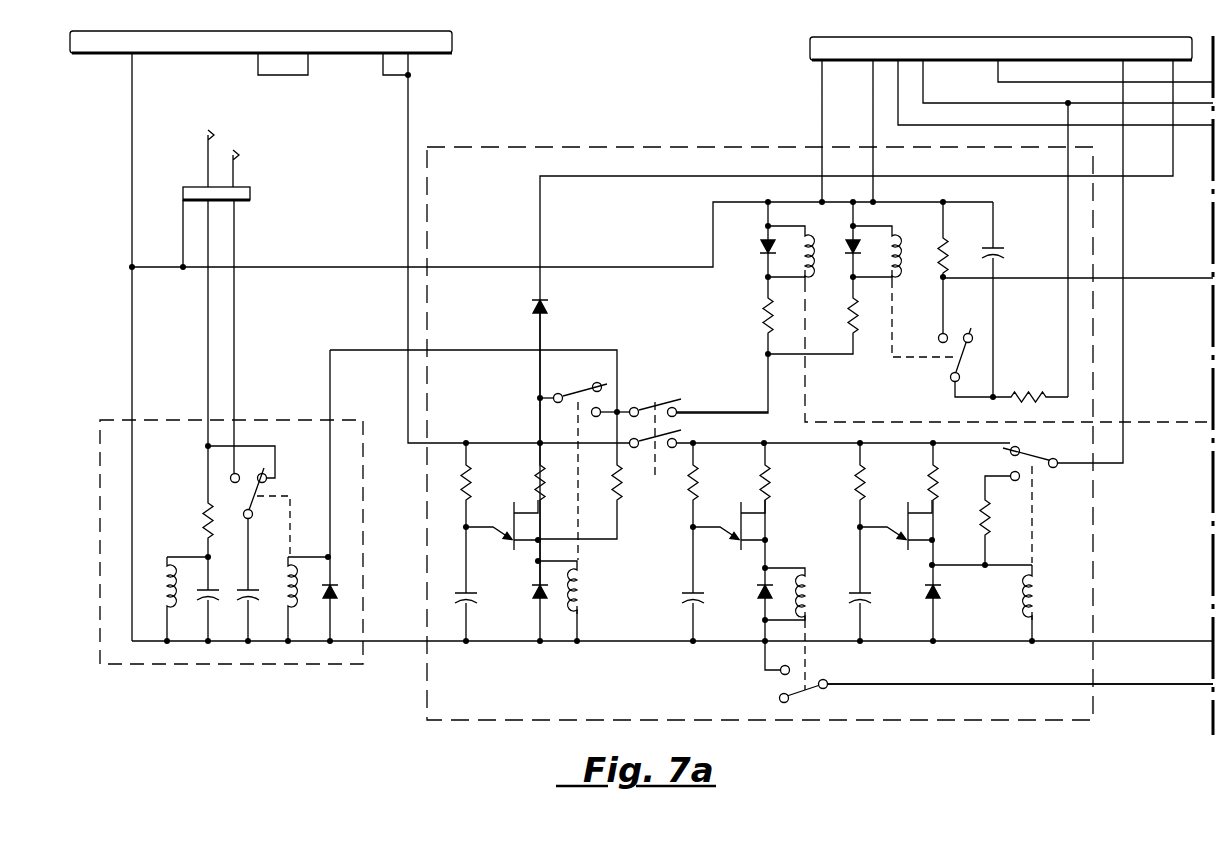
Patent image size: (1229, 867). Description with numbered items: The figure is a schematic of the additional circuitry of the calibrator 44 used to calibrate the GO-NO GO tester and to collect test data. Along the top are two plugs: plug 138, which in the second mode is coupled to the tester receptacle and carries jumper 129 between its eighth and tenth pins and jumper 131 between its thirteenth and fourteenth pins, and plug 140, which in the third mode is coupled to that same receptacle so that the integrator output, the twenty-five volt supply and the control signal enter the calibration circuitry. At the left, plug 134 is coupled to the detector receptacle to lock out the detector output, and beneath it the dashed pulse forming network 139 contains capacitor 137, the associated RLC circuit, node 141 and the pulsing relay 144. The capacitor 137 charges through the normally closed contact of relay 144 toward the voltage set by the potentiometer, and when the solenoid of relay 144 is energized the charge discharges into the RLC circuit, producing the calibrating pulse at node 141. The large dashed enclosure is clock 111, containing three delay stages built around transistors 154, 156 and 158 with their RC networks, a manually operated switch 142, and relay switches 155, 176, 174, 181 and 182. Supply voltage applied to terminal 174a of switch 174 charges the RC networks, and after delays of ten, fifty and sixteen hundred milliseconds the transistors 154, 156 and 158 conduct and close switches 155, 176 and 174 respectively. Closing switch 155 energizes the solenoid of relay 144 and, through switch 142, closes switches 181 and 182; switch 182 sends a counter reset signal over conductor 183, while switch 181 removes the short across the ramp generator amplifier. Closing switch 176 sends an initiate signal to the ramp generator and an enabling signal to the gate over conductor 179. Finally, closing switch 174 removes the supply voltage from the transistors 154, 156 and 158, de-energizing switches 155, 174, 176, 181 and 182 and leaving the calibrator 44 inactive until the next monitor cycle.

The calibrator 44 is at (380, 774).
The clock 111 is at (587, 147).
The jumper 129 is at (266, 76).
The jumper 131 is at (385, 77).
The plug 134 is at (250, 190).
The capacitor 137 is at (262, 600).
The plug 138 is at (452, 53).
The pulse forming network 139 is at (222, 420).
The plug 140 is at (810, 60).
The node 141 is at (208, 446).
The switch 142 is at (648, 398).
The pulsing relay 144 is at (290, 528).
The transistor 154 is at (480, 529).
The switch 155 is at (578, 458).
The transistor 156 is at (708, 529).
The transistor 158 is at (876, 529).
The switch 174 is at (1032, 503).
The terminal 174a is at (1020, 452).
The switch 176 is at (805, 660).
The conductor 179 is at (1110, 692).
The switch 181 is at (805, 398).
The switch 182 is at (910, 362).
The conductor 183 is at (1148, 276).